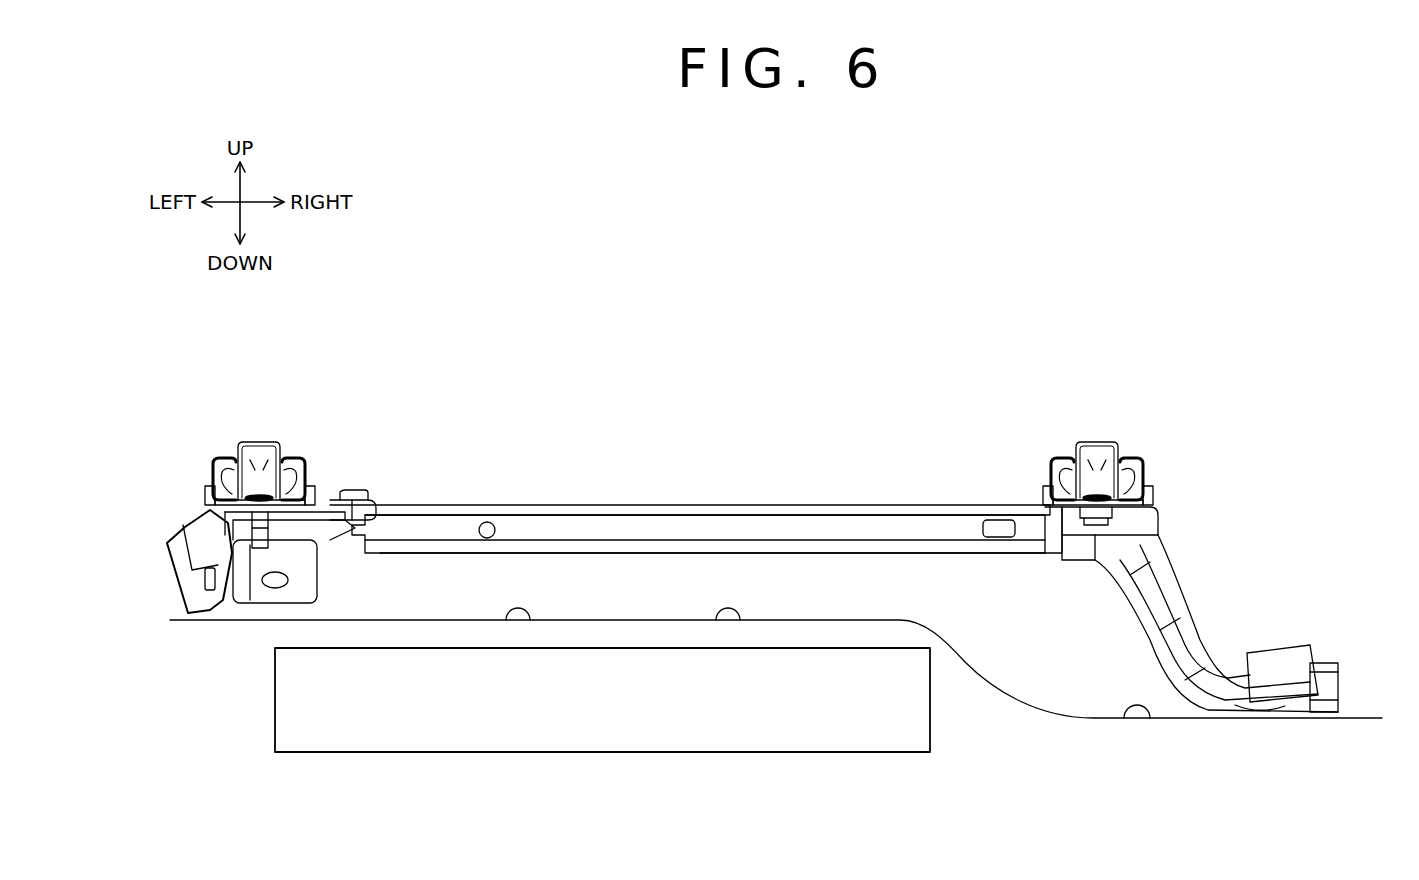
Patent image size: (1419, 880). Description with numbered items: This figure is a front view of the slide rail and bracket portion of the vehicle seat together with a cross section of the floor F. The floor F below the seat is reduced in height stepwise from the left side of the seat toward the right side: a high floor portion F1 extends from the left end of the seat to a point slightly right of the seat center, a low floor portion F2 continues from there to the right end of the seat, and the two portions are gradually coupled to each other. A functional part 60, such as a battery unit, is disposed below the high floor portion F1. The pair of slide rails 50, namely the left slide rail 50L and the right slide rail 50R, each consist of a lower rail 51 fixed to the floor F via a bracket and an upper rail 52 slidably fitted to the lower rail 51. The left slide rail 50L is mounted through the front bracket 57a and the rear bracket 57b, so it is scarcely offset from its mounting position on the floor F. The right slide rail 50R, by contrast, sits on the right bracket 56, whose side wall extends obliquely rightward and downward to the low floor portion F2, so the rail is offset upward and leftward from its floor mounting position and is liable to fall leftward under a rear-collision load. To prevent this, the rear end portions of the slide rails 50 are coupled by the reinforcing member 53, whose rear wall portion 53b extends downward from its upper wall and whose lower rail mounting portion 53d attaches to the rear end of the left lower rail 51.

The slide rail 50 is at (712, 444).
The left slide rail 50L is at (330, 369).
The right slide rail 50R is at (1168, 369).
The lower rail 51 is at (298, 445).
The upper rail 52 is at (258, 440).
The reinforcing member 53 is at (714, 505).
The rear wall portion 53b is at (935, 540).
The lower rail mounting portion 53d is at (355, 500).
The right bracket 56 is at (1175, 578).
The front bracket 57a is at (267, 600).
The rear bracket 57b is at (173, 567).
The functional part 60 is at (603, 752).
The high floor portion F1 is at (530, 620).
The floor F is at (740, 620).
The low floor portion F2 is at (1150, 718).